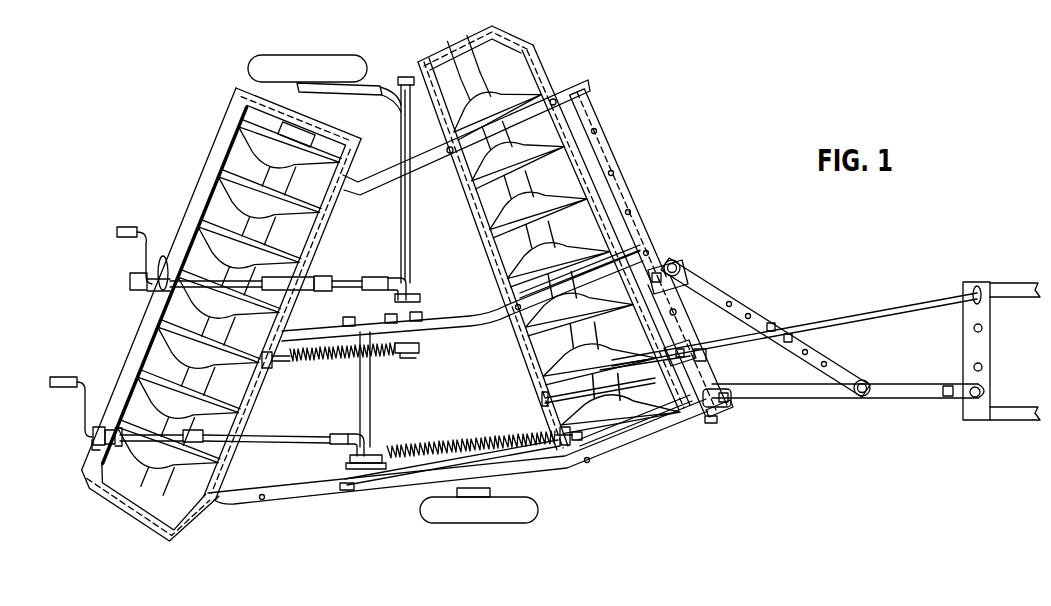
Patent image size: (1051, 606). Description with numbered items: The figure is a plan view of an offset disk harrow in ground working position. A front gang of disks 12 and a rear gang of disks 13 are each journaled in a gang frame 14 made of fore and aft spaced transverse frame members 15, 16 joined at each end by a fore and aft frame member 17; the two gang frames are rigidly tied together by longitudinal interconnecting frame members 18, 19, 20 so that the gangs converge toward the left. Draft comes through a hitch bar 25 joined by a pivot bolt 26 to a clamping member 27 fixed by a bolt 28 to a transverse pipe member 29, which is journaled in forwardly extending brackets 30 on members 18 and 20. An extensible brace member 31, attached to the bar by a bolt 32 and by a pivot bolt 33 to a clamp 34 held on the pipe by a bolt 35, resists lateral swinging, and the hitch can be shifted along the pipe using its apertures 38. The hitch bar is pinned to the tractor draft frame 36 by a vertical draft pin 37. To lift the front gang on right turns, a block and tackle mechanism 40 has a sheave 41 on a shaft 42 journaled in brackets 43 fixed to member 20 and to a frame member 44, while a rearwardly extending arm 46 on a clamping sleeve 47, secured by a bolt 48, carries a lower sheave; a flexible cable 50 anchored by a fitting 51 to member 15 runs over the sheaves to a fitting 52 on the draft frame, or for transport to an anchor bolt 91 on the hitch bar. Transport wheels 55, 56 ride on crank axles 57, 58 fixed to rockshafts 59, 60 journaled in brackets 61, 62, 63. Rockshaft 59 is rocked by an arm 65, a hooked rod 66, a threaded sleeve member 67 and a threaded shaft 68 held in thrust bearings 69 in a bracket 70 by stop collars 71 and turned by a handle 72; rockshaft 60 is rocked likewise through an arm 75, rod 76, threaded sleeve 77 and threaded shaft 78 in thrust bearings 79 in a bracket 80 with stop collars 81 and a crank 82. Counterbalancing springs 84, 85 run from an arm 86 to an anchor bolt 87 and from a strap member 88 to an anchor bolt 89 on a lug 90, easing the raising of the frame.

The front gang of disks 12 is at (503, 70).
The rear gang of disks 13 is at (246, 204).
The gang frame 14 is at (379, 294).
The front transverse frame member 15 is at (560, 80).
The rear transverse frame member 16 is at (188, 222).
The fore and aft extending frame member 17 is at (325, 127).
The interconnecting frame member 18 is at (400, 196).
The center frame member 19 is at (480, 332).
The right hand longitudinal frame member 20 is at (296, 497).
The hitch bar 25 is at (802, 398).
The pivot bolt 26 is at (729, 395).
The clamping member 27 is at (720, 391).
The bolt 28 is at (711, 424).
The pipe member 29 is at (634, 190).
The forwardly extending brackets 30 is at (592, 88).
The extensible brace member 31 is at (722, 294).
The bolt 32 is at (868, 384).
The pivot bolt 33 is at (681, 266).
The clamp 34 is at (668, 266).
The bolt 35 is at (656, 270).
The draft frame 36 is at (990, 350).
The draft pin 37 is at (985, 390).
The apertures 38 is at (613, 172).
The block and tackle mechanism 40 is at (592, 376).
The sheave 41 is at (616, 360).
The shaft 42 is at (605, 400).
The brackets 43 is at (590, 303).
The frame member 44 is at (546, 399).
The rearwardly extending arm 46 is at (708, 354).
The clamping sleeve 47 is at (692, 352).
The bolt 48 is at (684, 350).
The flexible cable 50 is at (614, 360).
The fitting 51 is at (677, 318).
The fitting 52 is at (979, 287).
The transport wheel 55 is at (318, 62).
The transport wheel 56 is at (520, 520).
The crank axle 57 is at (345, 90).
The crank axle 58 is at (420, 468).
The rockshaft 59 is at (411, 216).
The rockshaft 60 is at (371, 405).
The bracket 61 is at (398, 80).
The bracket 62 is at (422, 316).
The bracket 63 is at (345, 492).
The arm 65 is at (421, 295).
The rod 66 is at (405, 282).
The sleeve member 67 is at (352, 277).
The threaded shaft 68 is at (205, 279).
The thrust bearings 69 is at (163, 258).
The bracket 70 is at (152, 292).
The stop collars 71 is at (150, 285).
The handle 72 is at (122, 224).
The arm 75 is at (346, 458).
The rod 76 is at (356, 436).
The threaded sleeve 77 is at (264, 434).
The threaded shaft 78 is at (118, 436).
The thrust bearings 79 is at (100, 428).
The bracket 80 is at (109, 426).
The stop collars 81 is at (92, 446).
The crank 82 is at (66, 377).
The counterbalancing spring 84 is at (328, 360).
The counterbalancing spring 85 is at (474, 442).
The arm 86 is at (412, 355).
The anchor bolt 87 is at (272, 368).
The strap member 88 is at (372, 444).
The anchor bolt 89 is at (574, 456).
The lug 90 is at (592, 450).
The anchor bolt 91 is at (946, 398).